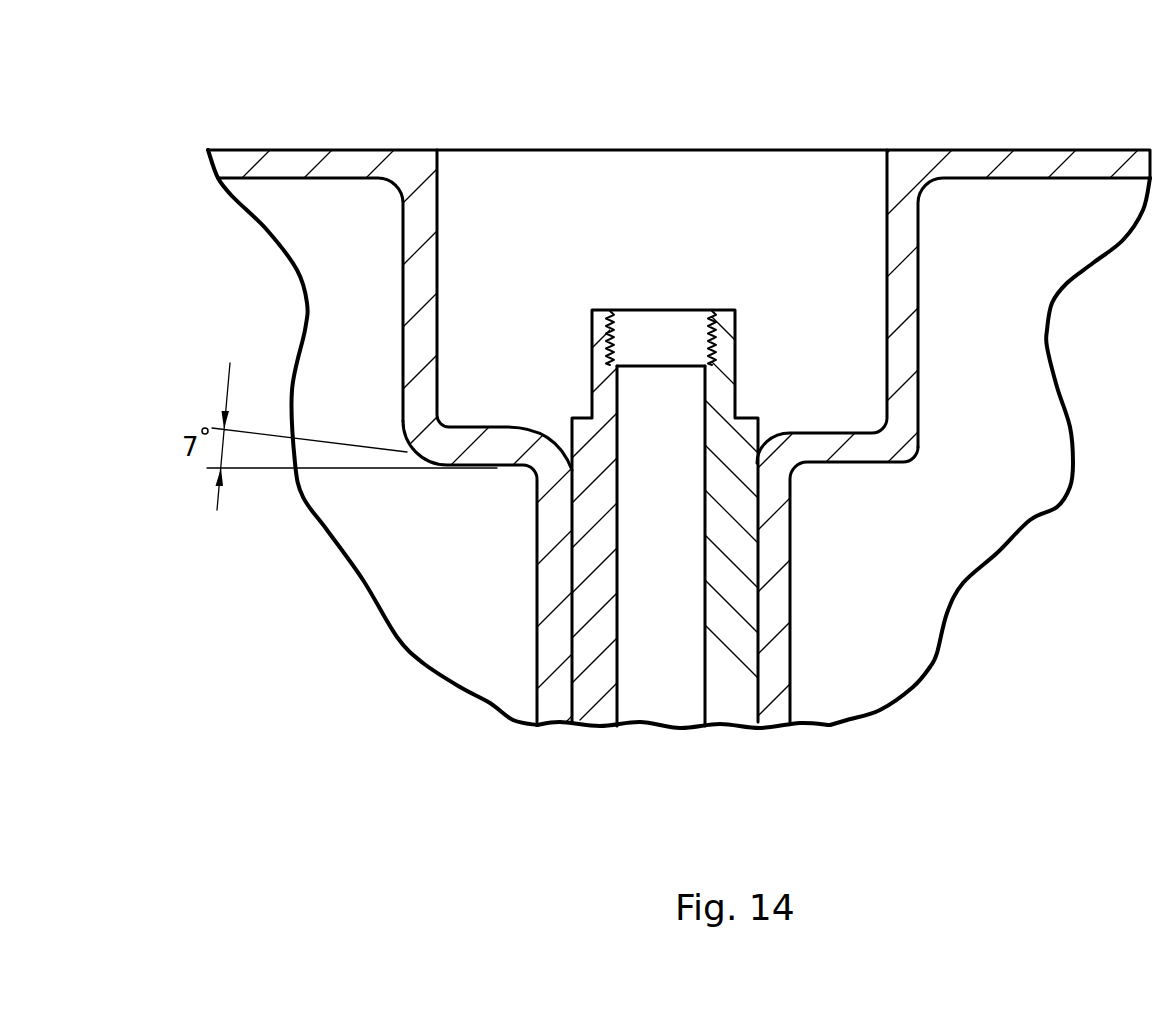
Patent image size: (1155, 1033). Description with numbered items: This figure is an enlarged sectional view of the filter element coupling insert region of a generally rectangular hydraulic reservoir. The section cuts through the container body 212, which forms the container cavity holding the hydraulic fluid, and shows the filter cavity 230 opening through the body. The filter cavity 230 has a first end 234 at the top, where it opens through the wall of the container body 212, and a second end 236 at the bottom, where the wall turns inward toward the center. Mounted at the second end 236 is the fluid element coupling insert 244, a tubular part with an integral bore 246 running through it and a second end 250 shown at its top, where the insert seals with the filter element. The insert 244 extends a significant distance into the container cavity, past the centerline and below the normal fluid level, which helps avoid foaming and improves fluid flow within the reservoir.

The container body 212 is at (1053, 150).
The filter cavity 230 is at (878, 422).
The first end 234 is at (395, 148).
The second end 236 is at (843, 453).
The fluid element coupling insert 244 is at (571, 468).
The integral bore 246 is at (680, 703).
The second end 250 is at (595, 310).